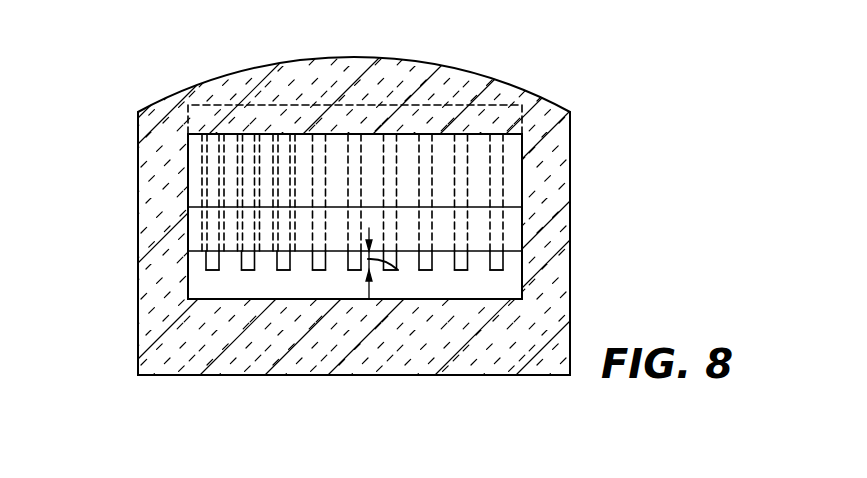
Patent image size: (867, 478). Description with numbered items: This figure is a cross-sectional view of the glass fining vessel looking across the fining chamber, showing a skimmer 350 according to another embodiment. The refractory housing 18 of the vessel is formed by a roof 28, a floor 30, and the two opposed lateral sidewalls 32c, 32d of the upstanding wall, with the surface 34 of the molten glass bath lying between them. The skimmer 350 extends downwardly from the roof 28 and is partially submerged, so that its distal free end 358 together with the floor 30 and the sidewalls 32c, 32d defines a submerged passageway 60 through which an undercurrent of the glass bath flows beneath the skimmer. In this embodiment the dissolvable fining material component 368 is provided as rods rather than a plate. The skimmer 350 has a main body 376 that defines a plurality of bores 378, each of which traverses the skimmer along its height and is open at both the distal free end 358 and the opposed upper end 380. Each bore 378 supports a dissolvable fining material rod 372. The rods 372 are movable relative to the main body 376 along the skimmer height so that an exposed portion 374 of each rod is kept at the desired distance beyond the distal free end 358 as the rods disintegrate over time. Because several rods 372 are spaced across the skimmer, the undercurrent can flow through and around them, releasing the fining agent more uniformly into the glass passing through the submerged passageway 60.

The housing 18 is at (348, 216).
The roof 28 is at (377, 69).
The floor 30 is at (274, 354).
The lateral sidewall 32c is at (160, 247).
The lateral sidewall 32d is at (557, 205).
The surface of the molten glass bath 34 is at (200, 207).
The submerged passageway 60 is at (188, 277).
The skimmer 350 is at (190, 168).
The distal free end 358 is at (510, 252).
The dissolvable fining material component 368 is at (462, 272).
The dissolvable fining material rod 372 is at (458, 240).
The exposed portion 374 is at (497, 268).
The main body 376 is at (193, 160).
The bore 378 is at (293, 150).
The upper end 380 is at (438, 106).